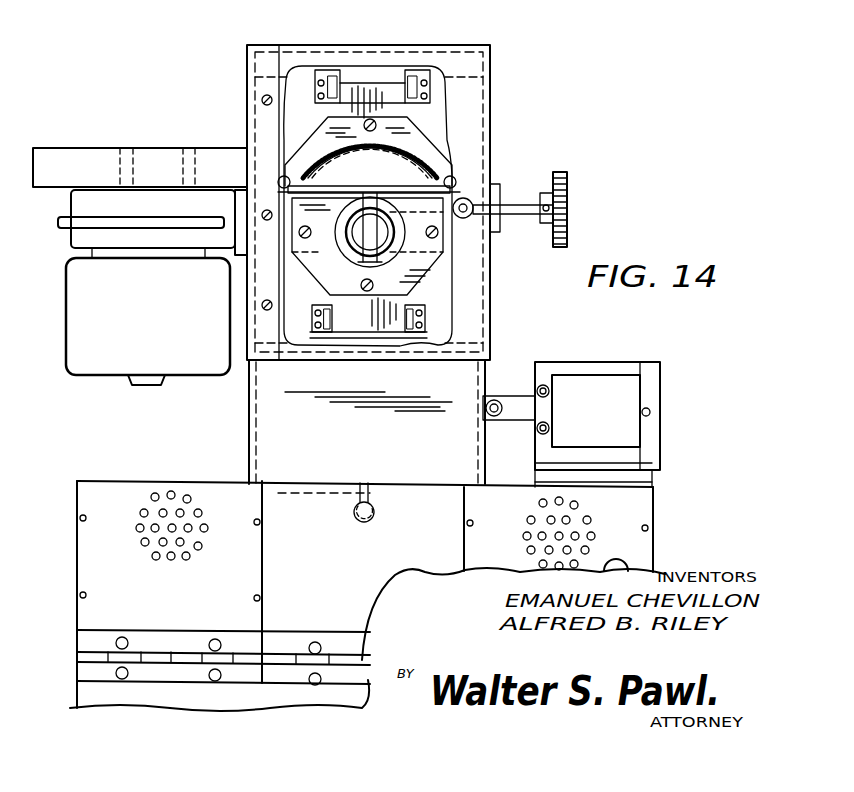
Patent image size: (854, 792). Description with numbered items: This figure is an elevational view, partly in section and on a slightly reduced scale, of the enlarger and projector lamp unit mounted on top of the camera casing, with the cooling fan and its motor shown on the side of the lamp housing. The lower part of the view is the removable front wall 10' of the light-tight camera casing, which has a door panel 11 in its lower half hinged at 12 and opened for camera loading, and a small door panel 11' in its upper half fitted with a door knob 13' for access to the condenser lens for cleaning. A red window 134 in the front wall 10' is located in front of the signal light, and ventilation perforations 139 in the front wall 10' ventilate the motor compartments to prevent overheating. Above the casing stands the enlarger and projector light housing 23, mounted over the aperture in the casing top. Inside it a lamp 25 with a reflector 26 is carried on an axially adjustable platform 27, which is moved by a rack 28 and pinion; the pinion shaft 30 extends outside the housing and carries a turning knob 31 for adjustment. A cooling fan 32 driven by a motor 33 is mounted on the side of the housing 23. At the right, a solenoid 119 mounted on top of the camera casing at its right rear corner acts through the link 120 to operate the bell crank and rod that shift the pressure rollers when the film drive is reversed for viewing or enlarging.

The removable front wall 10' is at (349, 596).
The door panel 11 is at (202, 669).
The small door panel 11' is at (367, 429).
The hinge 12 is at (77, 654).
The door knob 13' is at (326, 512).
The enlarger and projector light housing 23 is at (492, 297).
The lamp 25 is at (357, 252).
The reflector 26 is at (348, 154).
The axially adjustable platform 27 is at (372, 88).
The rack 28 is at (390, 163).
The shaft 30 is at (516, 201).
The turning knob 31 is at (566, 187).
The cooling fan 32 is at (75, 206).
The motor 33 is at (77, 282).
The solenoid 119 is at (662, 392).
The link 120 is at (495, 426).
The red window 134 is at (620, 563).
The ventilation perforations 139 is at (186, 560).